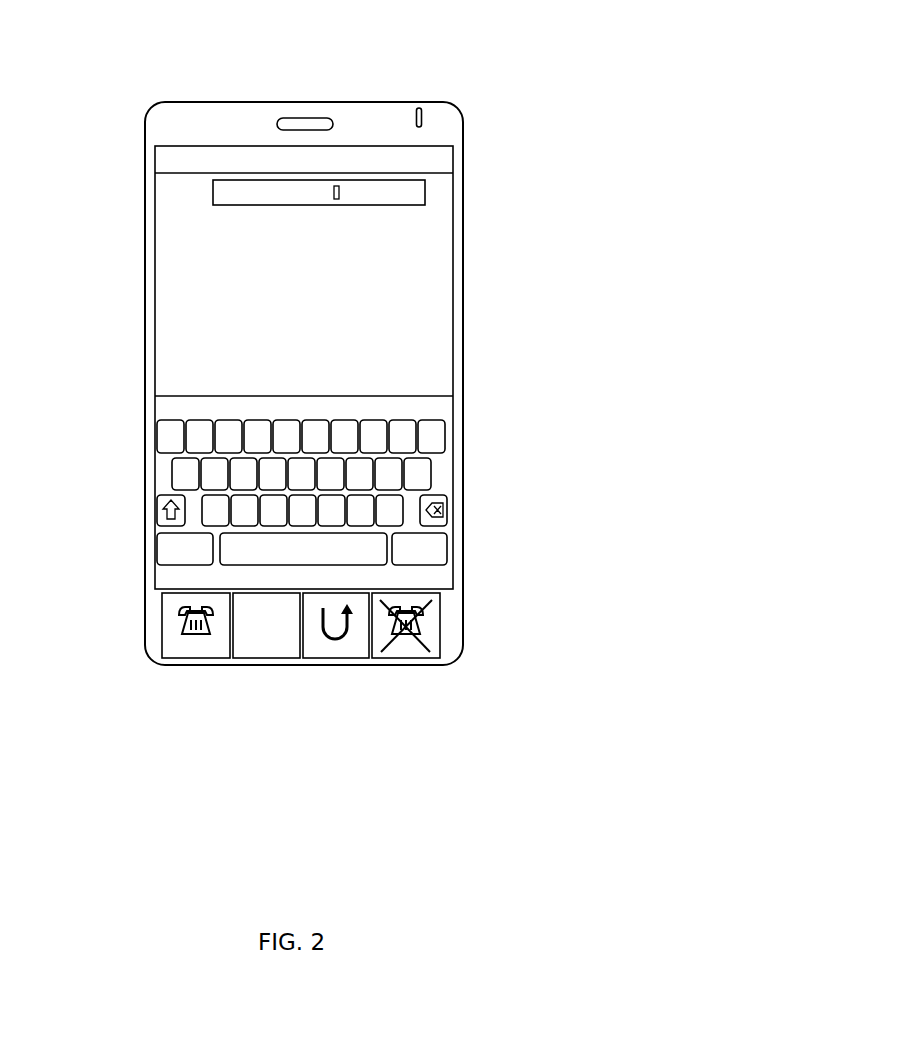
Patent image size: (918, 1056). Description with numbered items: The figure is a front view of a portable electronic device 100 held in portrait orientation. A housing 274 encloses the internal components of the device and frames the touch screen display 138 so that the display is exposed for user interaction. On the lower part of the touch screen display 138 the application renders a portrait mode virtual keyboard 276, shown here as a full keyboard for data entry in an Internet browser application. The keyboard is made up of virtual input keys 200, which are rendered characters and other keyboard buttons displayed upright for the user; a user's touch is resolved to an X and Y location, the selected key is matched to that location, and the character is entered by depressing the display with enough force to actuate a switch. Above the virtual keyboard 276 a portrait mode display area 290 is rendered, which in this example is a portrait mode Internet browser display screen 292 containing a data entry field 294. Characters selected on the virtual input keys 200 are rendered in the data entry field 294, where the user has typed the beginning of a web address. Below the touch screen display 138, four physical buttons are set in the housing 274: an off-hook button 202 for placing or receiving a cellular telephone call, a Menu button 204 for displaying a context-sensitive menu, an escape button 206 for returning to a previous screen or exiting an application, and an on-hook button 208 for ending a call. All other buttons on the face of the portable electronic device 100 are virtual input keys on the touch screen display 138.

The portable electronic device 100 is at (513, 50).
The touch screen display 138 is at (449, 528).
The virtual input keys 200 is at (435, 474).
The off-hook button 202 is at (203, 645).
The Menu button 204 is at (280, 640).
The escape button 206 is at (348, 645).
The on-hook button 208 is at (410, 645).
The housing 274 is at (459, 366).
The portrait mode virtual keyboard 276 is at (146, 564).
The portrait mode display area 290 is at (465, 154).
The portrait mode Internet browser display screen 292 is at (422, 270).
The data entry field 294 is at (417, 190).